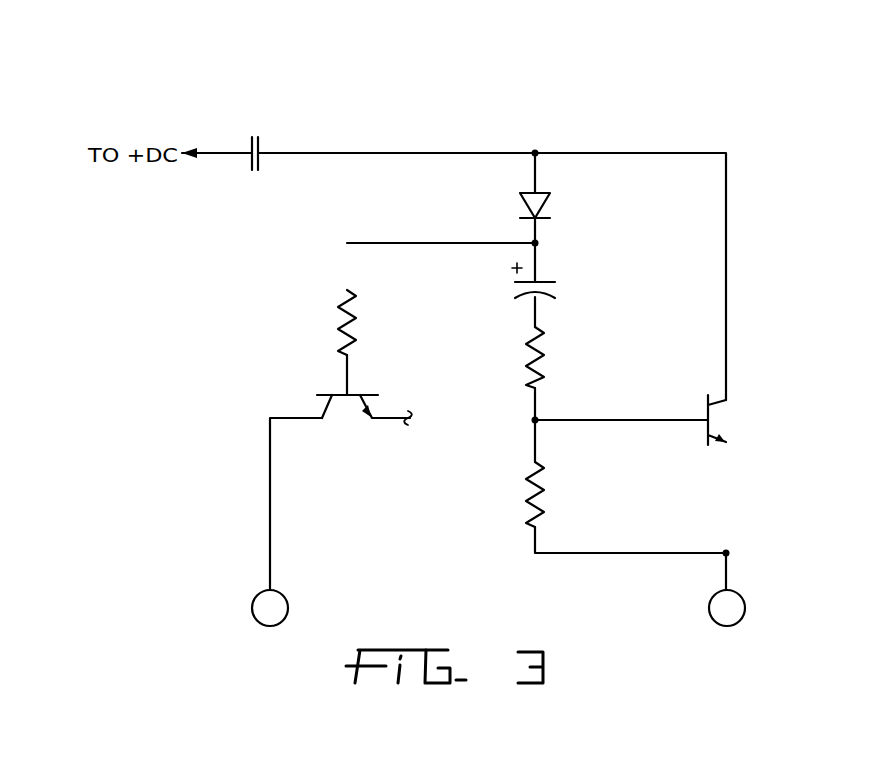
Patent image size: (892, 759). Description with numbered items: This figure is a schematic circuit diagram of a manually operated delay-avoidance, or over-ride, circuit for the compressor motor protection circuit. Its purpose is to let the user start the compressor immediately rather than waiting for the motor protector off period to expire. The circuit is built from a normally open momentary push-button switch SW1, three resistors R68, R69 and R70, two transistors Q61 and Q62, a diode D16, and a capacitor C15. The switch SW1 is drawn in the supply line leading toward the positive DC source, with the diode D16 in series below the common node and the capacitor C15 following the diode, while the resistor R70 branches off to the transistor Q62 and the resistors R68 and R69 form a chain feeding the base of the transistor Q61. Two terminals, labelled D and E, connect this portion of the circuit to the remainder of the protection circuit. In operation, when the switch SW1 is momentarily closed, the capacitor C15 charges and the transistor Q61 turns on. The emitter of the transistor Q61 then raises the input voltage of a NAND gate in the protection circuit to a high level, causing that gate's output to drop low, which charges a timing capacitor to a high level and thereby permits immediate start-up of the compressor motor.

The normally open momentary push-button switch SW1 is at (263, 135).
The diode D16 is at (565, 205).
The capacitor C15 is at (558, 282).
The resistor R70 is at (373, 322).
The resistor R68 is at (562, 357).
The resistor R69 is at (562, 494).
The transistor Q61 is at (744, 420).
The transistor Q62 is at (364, 422).
The terminal D is at (270, 608).
The terminal E is at (727, 608).